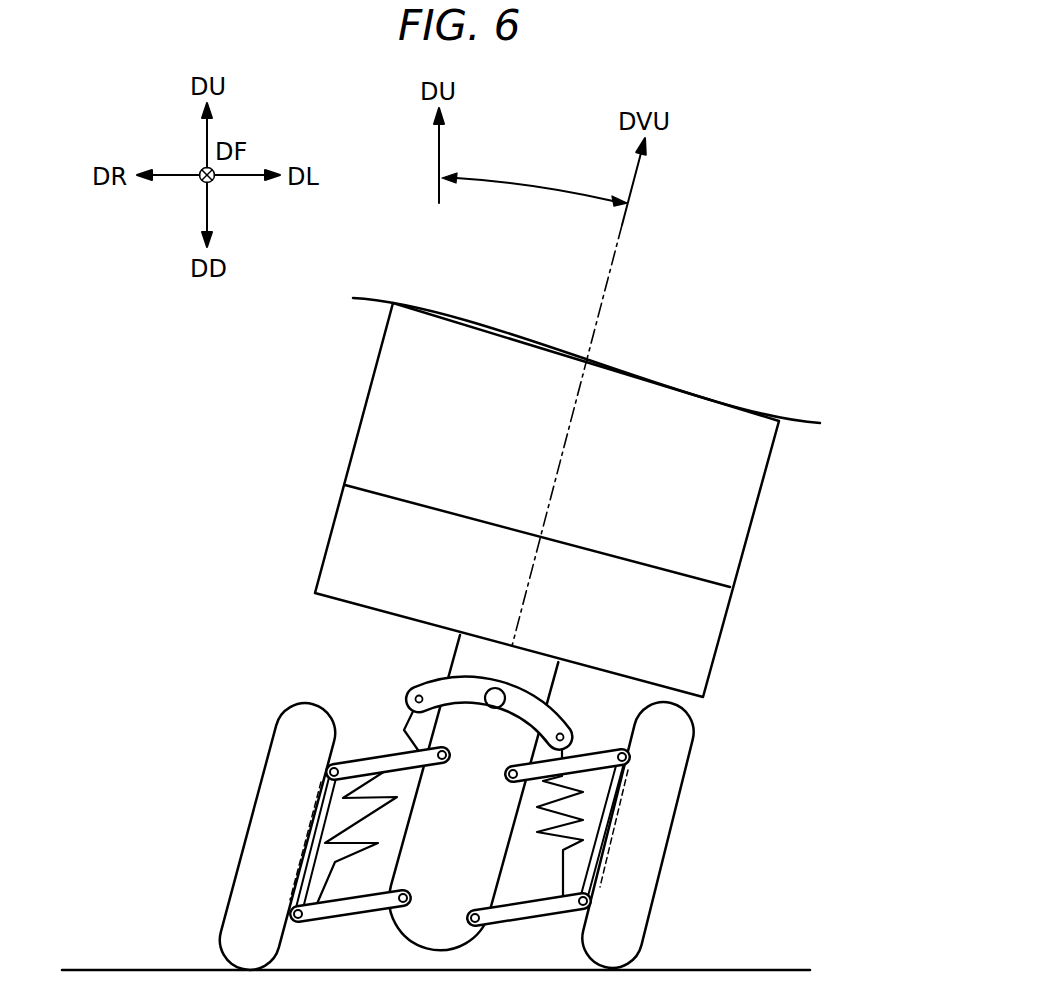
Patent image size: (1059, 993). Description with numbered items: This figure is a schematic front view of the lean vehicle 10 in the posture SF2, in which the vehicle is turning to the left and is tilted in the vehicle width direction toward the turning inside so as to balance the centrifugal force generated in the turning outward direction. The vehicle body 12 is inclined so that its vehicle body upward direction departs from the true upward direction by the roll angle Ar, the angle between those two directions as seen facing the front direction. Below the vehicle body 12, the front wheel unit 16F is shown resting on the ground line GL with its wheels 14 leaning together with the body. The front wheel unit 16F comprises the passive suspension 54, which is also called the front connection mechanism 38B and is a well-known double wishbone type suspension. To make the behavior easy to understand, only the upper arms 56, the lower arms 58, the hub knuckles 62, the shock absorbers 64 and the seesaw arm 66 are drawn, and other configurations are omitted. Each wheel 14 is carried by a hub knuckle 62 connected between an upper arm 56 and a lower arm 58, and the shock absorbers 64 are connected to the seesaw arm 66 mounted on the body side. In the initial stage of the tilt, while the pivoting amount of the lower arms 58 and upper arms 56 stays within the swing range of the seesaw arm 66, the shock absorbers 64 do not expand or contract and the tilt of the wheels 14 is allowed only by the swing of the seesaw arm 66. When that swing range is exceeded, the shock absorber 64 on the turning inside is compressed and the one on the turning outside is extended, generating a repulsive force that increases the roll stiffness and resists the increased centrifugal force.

The lean vehicle 10 is at (706, 390).
The vehicle body 12 is at (347, 536).
The wheels 14 is at (252, 873).
The front wheel unit 16F is at (345, 662).
The front connection mechanism 38B is at (745, 712).
The passive suspension 54 is at (619, 798).
The upper arms 56 is at (357, 762).
The lower arms 58 is at (348, 912).
The hub knuckles 62 is at (323, 870).
The shock absorbers 64 is at (342, 834).
The seesaw arm 66 is at (435, 687).
The posture SF2 is at (771, 114).
The ground line GL is at (712, 968).
The roll angle Ar is at (534, 179).